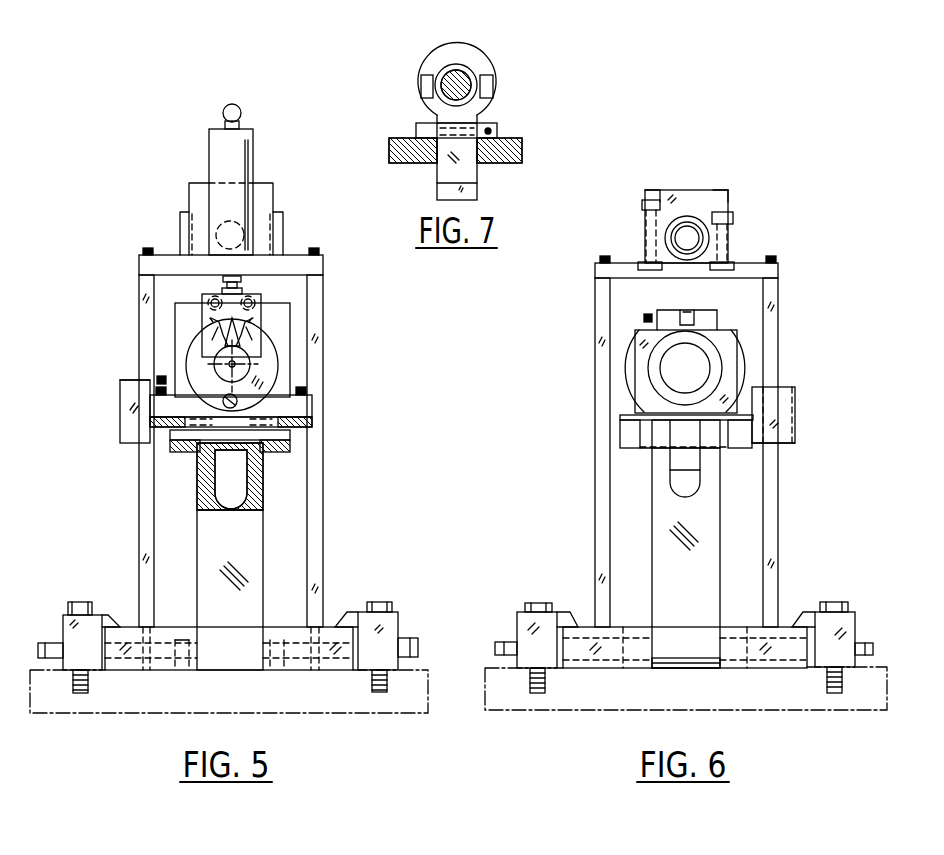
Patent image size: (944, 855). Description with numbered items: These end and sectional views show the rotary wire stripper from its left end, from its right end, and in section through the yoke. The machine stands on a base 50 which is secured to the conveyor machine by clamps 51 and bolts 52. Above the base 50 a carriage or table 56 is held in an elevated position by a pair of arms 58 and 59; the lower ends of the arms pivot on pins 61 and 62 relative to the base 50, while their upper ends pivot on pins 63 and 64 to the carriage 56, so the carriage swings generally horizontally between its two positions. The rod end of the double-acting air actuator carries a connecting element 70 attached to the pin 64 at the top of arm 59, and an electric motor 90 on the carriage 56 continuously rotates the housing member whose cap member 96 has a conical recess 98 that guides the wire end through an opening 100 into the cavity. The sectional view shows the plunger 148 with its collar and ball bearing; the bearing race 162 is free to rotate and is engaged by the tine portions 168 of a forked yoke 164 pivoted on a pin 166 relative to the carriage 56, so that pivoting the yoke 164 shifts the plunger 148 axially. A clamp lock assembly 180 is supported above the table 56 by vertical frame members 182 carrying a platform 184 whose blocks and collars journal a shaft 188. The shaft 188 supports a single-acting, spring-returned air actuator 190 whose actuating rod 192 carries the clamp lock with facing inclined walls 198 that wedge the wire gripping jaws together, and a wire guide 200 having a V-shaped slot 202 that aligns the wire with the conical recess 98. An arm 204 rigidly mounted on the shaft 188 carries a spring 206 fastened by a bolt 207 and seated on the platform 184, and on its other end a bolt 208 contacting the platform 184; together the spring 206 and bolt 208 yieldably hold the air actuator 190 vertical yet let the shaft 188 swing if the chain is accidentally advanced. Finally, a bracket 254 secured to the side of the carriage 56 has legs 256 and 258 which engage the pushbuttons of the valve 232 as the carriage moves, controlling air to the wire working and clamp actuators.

In FIG. 5, the base 50 is at (298, 670).
In FIG. 6, the base 50 is at (768, 668).
In FIG. 5, the clamps 51 is at (63, 617).
In FIG. 6, the clamps 51 is at (517, 613).
In FIG. 5, the bolts 52 is at (80, 602).
In FIG. 6, the bolts 52 is at (530, 603).
In FIG. 5, the carriage or table 56 is at (312, 440).
In FIG. 6, the carriage or table 56 is at (620, 450).
In FIG. 7, the carriage or table 56 is at (522, 148).
In FIG. 5, the arm 58 is at (263, 527).
In FIG. 6, the arm 59 is at (720, 541).
In FIG. 5, the pin 61 is at (183, 670).
In FIG. 6, the pin 62 is at (665, 670).
In FIG. 5, the pin 63 is at (293, 434).
In FIG. 6, the pin 64 is at (648, 449).
In FIG. 6, the connecting element 70 is at (700, 468).
In FIG. 6, the electric motor 90 is at (745, 358).
In FIG. 5, the cap member 96 is at (277, 378).
In FIG. 5, the conical recess 98 is at (227, 373).
In FIG. 5, the opening 100 is at (236, 364).
In FIG. 7, the plunger 148 is at (462, 76).
In FIG. 7, the bearing race 162 is at (471, 50).
In FIG. 7, the yoke 164 is at (478, 178).
In FIG. 7, the pin 166 is at (490, 124).
In FIG. 7, the tine portions 168 is at (420, 79).
In FIG. 5, the clamp lock assembly 180 is at (276, 287).
In FIG. 5, the vertical frame members 182 is at (142, 283).
In FIG. 6, the vertical frame members 182 is at (594, 289).
In FIG. 5, the platform 184 is at (300, 253).
In FIG. 6, the platform 184 is at (781, 270).
In FIG. 6, the shaft 188 is at (689, 230).
In FIG. 5, the air actuator 190 is at (254, 152).
In FIG. 5, the actuating rod 192 is at (222, 279).
In FIG. 5, the inclined walls 198 is at (262, 326).
In FIG. 5, the wire guide 200 is at (258, 349).
In FIG. 5, the V-shaped slot 202 is at (214, 338).
In FIG. 6, the arm 204 is at (735, 222).
In FIG. 6, the spring 206 is at (648, 245).
In FIG. 6, the bolt 207 is at (646, 200).
In FIG. 6, the bolt 208 is at (730, 198).
In FIG. 6, the valve 232 is at (796, 397).
In FIG. 5, the bracket 254 is at (145, 385).
In FIG. 6, the bracket 254 is at (787, 385).
In FIG. 5, the bracket leg 256 is at (120, 422).
In FIG. 6, the bracket leg 258 is at (796, 441).